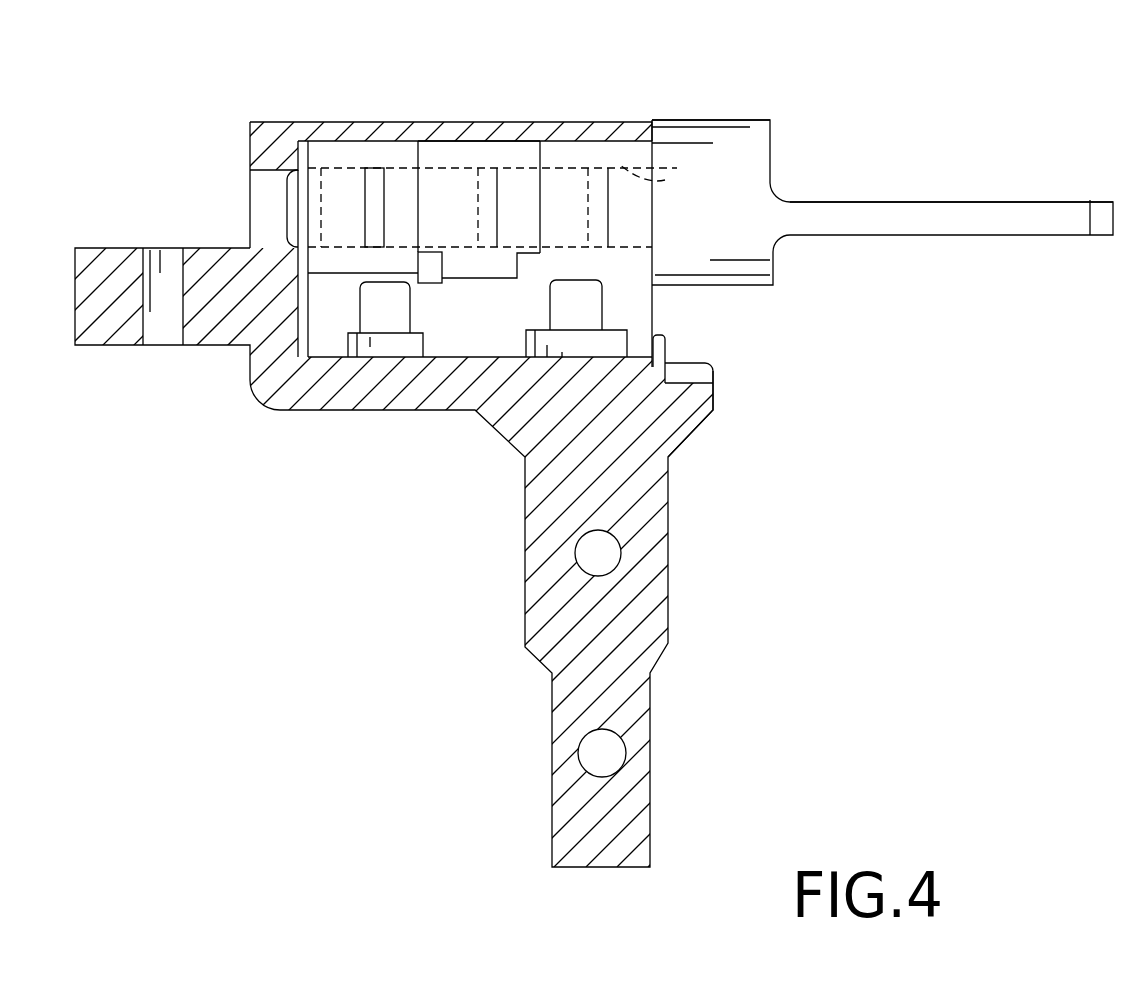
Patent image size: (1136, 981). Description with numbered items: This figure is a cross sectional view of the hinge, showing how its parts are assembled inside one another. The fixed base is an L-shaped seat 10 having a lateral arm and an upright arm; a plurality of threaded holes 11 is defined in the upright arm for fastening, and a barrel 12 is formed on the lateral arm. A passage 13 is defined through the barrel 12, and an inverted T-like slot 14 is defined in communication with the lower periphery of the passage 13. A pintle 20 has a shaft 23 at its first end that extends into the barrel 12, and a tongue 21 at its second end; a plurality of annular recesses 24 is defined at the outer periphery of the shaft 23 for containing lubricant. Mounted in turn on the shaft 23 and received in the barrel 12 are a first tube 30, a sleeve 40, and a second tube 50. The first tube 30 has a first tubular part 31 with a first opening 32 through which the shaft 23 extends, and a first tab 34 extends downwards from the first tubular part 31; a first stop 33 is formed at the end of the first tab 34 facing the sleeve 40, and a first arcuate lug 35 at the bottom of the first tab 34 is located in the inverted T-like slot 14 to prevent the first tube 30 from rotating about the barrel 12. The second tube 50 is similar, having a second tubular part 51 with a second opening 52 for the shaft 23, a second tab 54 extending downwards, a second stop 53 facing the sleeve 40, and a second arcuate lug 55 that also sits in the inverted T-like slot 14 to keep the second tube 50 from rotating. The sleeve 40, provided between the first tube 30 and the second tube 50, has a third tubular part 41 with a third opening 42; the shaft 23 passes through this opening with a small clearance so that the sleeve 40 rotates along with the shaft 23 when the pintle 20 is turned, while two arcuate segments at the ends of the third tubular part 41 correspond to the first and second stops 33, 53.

The L-shaped seat 10 is at (662, 622).
The threaded holes 11 is at (607, 552).
The barrel 12 is at (508, 128).
The passage 13 is at (565, 133).
The inverted T-like slot 14 is at (635, 352).
The pintle 20 is at (908, 163).
The tongue 21 is at (995, 213).
The shaft 23 is at (443, 177).
The annular recesses 24 is at (485, 170).
The first tube 30 is at (603, 147).
The first tubular part 31 is at (652, 121).
The first opening 32 is at (665, 180).
The first stop 33 is at (533, 253).
The first tab 34 is at (645, 315).
The first arcuate lug 35 is at (617, 338).
The sleeve 40 is at (423, 143).
The third tubular part 41 is at (452, 150).
The third opening 42 is at (413, 213).
The second tube 50 is at (337, 143).
The second tubular part 51 is at (350, 147).
The second opening 52 is at (330, 165).
The second stop 53 is at (428, 253).
The second tab 54 is at (325, 343).
The second arcuate lug 55 is at (402, 347).